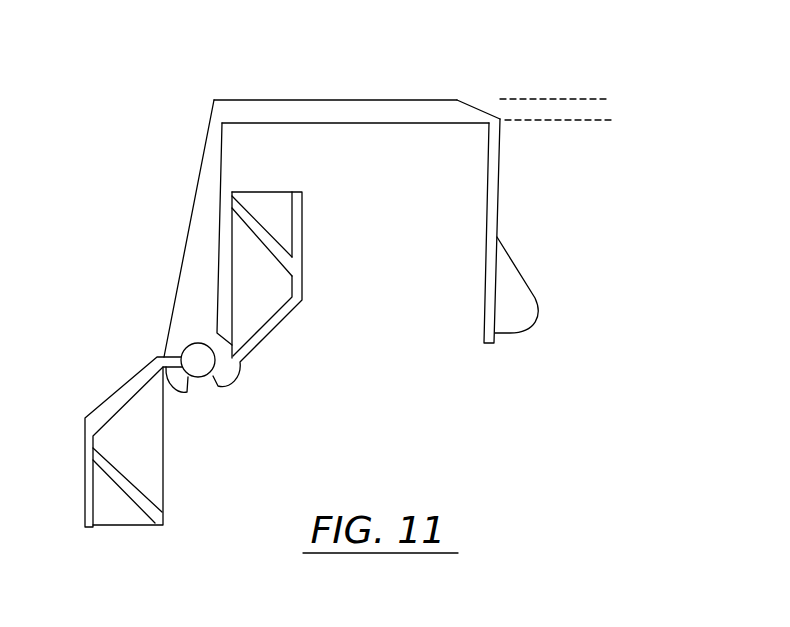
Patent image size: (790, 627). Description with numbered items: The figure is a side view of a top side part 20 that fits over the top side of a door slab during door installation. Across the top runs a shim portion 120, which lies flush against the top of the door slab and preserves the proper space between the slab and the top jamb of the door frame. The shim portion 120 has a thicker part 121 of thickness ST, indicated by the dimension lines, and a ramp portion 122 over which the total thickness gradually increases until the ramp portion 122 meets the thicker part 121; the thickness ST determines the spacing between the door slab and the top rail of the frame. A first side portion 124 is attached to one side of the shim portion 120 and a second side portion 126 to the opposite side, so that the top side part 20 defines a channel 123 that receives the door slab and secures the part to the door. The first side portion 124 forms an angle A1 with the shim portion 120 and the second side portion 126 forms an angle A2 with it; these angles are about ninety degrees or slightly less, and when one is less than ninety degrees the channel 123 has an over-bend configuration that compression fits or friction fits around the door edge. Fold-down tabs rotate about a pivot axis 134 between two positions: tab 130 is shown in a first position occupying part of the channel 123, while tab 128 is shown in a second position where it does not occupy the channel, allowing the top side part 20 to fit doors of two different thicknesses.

The top side part 20 is at (598, 203).
The shim portion 120 is at (340, 99).
The thicker part 121 is at (243, 99).
The ramp portion 122 is at (480, 109).
The channel 123 is at (387, 358).
The first side portion 124 is at (500, 212).
The second side portion 126 is at (192, 205).
The fold-down tab 128 is at (83, 482).
The fold-down tab 130 is at (302, 217).
The pivot axis 134 is at (193, 360).
The angle A1 is at (450, 124).
The angle A2 is at (257, 125).
The thickness ST is at (561, 65).